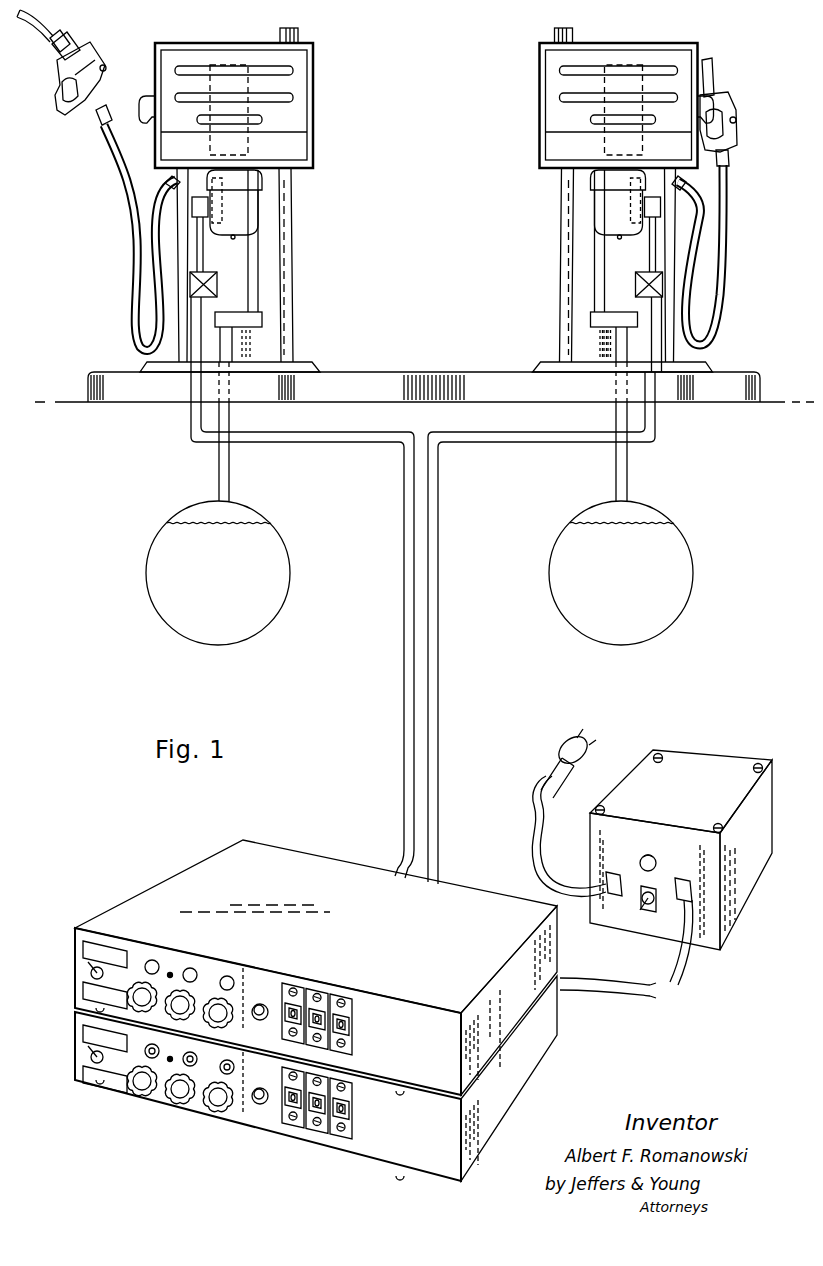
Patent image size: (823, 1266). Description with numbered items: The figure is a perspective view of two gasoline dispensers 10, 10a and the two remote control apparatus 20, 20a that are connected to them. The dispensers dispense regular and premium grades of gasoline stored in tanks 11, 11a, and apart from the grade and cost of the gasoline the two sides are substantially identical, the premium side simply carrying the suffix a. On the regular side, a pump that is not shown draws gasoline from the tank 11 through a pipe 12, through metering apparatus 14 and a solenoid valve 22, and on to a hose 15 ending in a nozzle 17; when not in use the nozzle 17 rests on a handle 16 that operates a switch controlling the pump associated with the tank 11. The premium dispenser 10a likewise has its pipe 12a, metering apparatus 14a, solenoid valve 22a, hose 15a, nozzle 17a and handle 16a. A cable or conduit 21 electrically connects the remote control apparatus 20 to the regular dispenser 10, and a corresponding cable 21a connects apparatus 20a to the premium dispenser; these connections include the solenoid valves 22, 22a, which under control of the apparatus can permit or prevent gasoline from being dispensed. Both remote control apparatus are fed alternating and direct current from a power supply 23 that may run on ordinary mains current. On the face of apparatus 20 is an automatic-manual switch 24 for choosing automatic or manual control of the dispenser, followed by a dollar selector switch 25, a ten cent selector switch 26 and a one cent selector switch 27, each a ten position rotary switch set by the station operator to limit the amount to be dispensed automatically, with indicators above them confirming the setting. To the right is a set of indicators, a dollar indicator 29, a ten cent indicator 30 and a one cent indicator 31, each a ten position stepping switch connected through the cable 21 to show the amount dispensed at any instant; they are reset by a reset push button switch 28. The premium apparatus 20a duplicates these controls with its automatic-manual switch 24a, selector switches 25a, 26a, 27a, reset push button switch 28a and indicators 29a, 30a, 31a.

The dispenser 10 is at (322, 78).
The dispenser 10a is at (532, 78).
The tank 11 is at (276, 582).
The tank 11a is at (565, 547).
The pipe 12 is at (256, 292).
The pipe 12a is at (594, 296).
The metering apparatus 14 is at (268, 207).
The metering apparatus 14a is at (593, 207).
The hose 15 is at (128, 205).
The hose 15a is at (728, 290).
The handle 16 is at (143, 95).
The handle 16a is at (728, 104).
The nozzle 17 is at (92, 52).
The nozzle 17a is at (730, 137).
The remote control apparatus 20 is at (158, 882).
The remote control apparatus 20a is at (513, 1100).
The cable 21 is at (403, 693).
The cable 21a is at (434, 718).
The solenoid valve 22 is at (224, 200).
The solenoid valve 22a is at (632, 200).
The power supply 23 is at (698, 763).
The automatic-manual switch 24 is at (92, 972).
The automatic-manual switch 24a is at (92, 1054).
The dollar selector switch 25 is at (142, 980).
The dollar selector switch 25a is at (142, 1082).
The ten cent selector switch 26 is at (180, 990).
The ten cent selector switch 26a is at (180, 1090).
The one cent selector switch 27 is at (218, 997).
The one cent selector switch 27a is at (218, 1099).
The reset push button switch 28 is at (260, 1003).
The reset push button switch 28a is at (260, 1103).
The dollar indicator 29 is at (292, 991).
The dollar indicator 29a is at (292, 1128).
The ten cent indicator 30 is at (316, 996).
The ten cent indicator 30a is at (318, 1134).
The one cent indicator 31 is at (341, 1002).
The one cent indicator 31a is at (341, 1140).